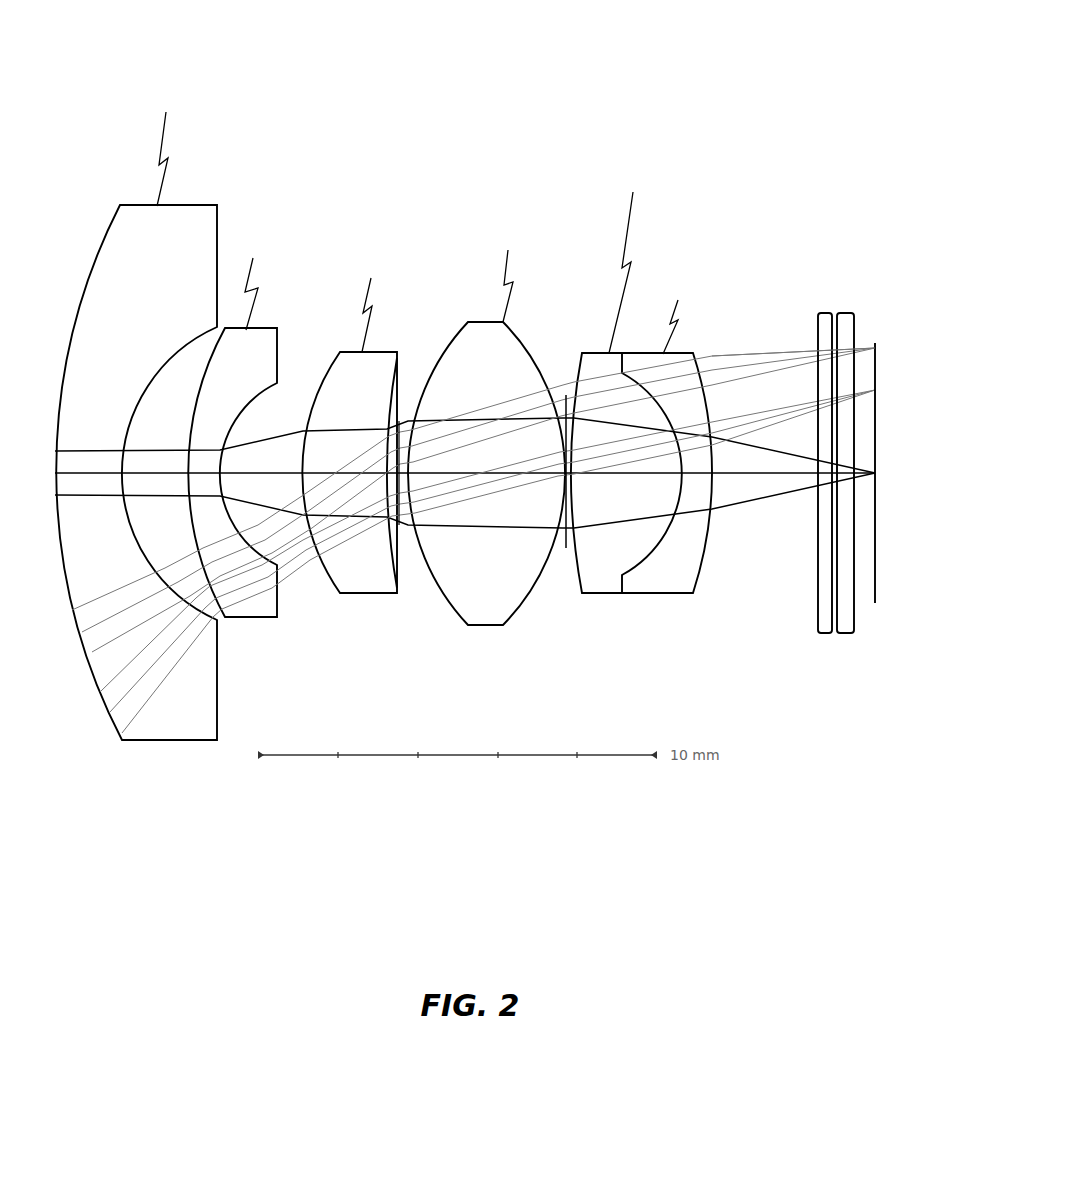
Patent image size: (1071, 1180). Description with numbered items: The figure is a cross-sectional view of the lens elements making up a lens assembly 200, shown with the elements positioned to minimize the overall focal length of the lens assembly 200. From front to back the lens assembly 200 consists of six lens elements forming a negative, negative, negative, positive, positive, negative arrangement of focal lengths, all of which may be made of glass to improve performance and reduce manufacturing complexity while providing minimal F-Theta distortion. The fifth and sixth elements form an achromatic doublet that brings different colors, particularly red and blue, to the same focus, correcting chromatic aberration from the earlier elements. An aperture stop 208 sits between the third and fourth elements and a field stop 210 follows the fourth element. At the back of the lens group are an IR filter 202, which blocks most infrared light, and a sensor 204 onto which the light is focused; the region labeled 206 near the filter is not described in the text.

The lens assembly 200 is at (519, 98).
The IR filter 202 is at (830, 300).
The sensor 204 is at (896, 437).
The light rays near image 206 is at (774, 336).
The aperture stop 208 is at (439, 341).
The field stop 210 is at (573, 408).